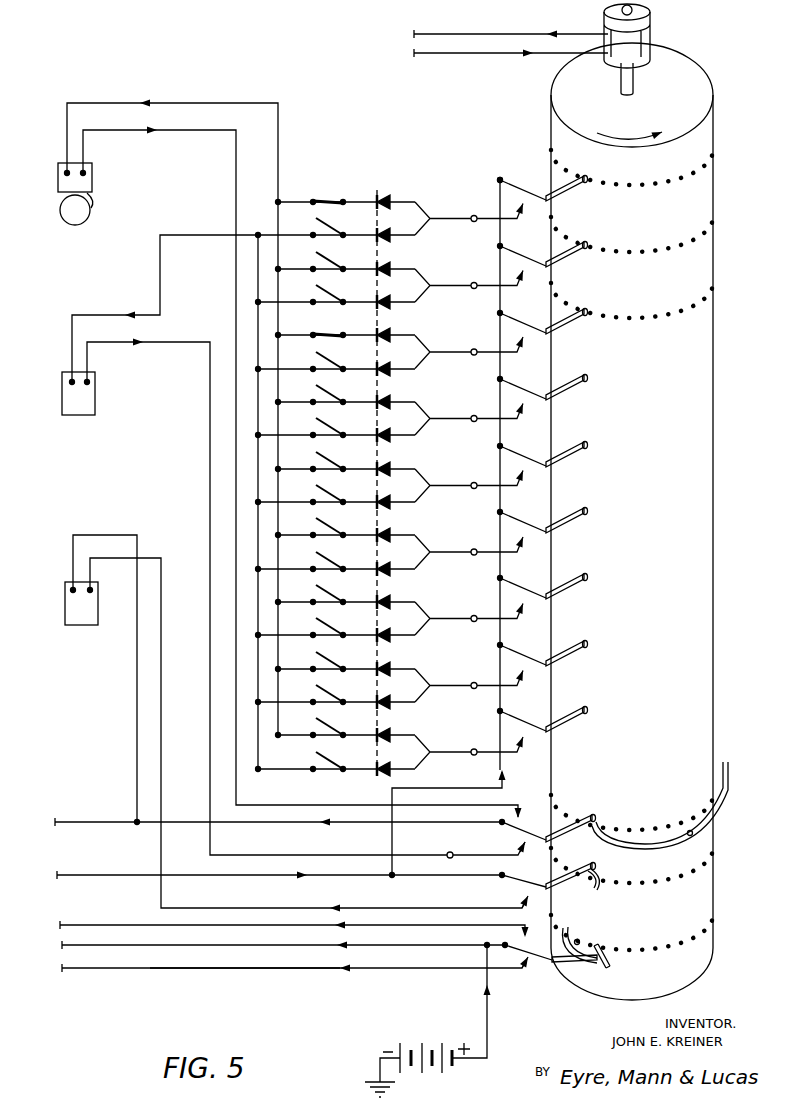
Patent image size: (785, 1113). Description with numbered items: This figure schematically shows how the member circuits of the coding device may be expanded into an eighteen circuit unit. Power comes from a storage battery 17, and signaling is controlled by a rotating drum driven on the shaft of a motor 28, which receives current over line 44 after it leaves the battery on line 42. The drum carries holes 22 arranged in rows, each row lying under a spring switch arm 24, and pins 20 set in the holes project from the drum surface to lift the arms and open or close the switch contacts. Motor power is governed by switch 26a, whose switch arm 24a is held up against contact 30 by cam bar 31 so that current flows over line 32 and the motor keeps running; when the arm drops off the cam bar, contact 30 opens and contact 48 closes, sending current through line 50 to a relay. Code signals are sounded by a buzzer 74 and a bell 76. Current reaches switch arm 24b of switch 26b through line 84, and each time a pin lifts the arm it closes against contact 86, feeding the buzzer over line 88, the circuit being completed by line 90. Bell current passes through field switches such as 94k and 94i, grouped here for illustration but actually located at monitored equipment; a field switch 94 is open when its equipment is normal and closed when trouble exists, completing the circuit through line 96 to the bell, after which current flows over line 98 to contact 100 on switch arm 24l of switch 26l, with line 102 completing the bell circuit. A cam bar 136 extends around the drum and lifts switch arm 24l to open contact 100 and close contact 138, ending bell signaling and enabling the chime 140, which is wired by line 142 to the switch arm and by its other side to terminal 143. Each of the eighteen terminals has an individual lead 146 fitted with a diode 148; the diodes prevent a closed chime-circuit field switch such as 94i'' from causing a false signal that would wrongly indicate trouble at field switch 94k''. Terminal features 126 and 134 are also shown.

The storage battery 17 is at (436, 1050).
The pins 20 is at (614, 892).
The holes 22 is at (658, 320).
The spring switch arms 24 is at (588, 443).
The switch arm 24a is at (602, 968).
The switch arm 24b is at (595, 877).
The switch arm 24l is at (590, 818).
The switch 26a is at (577, 971).
The switch 26b is at (592, 888).
The switch 26l is at (660, 805).
The motor 28 is at (650, 30).
The contact 30 is at (527, 960).
The cam bar 31 is at (578, 940).
The line 32 is at (283, 972).
The line 42 is at (63, 967).
The line 44 is at (462, 54).
The contact 48 is at (524, 936).
The line 50 is at (134, 931).
The buzzer 74 is at (65, 608).
The bell 76 is at (93, 180).
The line 84 is at (371, 878).
The contact 86 is at (525, 897).
The line 88 is at (162, 808).
The line 90 is at (137, 778).
The field switch 94 is at (391, 454).
The field switch 94k is at (346, 193).
The field switch 94k'' is at (336, 224).
The field switch 94i is at (346, 326).
The field switch 94i'' is at (336, 358).
The line 96 is at (201, 103).
The line 98 is at (203, 133).
The contact 100 is at (521, 815).
The line 102 is at (445, 820).
The terminals 126 is at (470, 195).
The junction 134 is at (279, 201).
The cam bar 136 is at (690, 837).
The contact 138 is at (541, 860).
The chime 140 is at (95, 401).
The line 142 is at (210, 484).
The terminal 143 is at (258, 234).
The individual lead 146 is at (426, 431).
The diode 148 is at (392, 399).